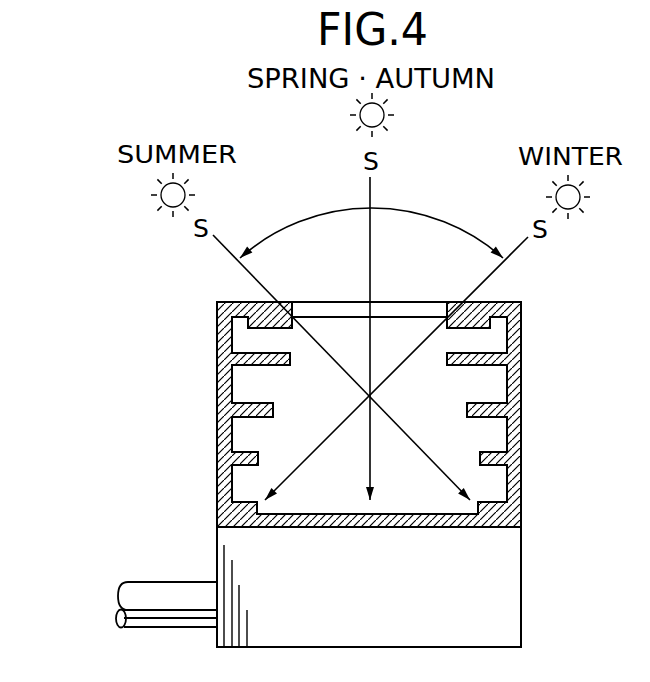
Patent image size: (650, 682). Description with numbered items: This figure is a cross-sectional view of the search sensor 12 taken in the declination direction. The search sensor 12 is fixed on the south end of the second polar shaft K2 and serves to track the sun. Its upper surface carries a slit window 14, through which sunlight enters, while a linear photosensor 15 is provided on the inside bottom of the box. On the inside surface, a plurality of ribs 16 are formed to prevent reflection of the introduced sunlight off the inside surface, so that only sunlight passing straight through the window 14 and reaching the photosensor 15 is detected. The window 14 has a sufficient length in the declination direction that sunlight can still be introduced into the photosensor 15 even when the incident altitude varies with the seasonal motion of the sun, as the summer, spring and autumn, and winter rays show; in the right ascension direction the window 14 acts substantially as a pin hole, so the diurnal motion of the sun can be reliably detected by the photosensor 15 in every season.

The search sensor 12 is at (183, 390).
The slit window 14 is at (393, 303).
The linear photosensor 15 is at (216, 450).
The ribs 16 is at (493, 366).
The second polar shaft K2 is at (143, 597).